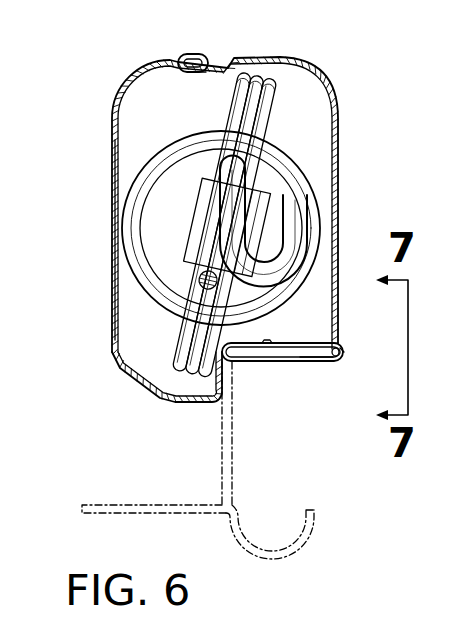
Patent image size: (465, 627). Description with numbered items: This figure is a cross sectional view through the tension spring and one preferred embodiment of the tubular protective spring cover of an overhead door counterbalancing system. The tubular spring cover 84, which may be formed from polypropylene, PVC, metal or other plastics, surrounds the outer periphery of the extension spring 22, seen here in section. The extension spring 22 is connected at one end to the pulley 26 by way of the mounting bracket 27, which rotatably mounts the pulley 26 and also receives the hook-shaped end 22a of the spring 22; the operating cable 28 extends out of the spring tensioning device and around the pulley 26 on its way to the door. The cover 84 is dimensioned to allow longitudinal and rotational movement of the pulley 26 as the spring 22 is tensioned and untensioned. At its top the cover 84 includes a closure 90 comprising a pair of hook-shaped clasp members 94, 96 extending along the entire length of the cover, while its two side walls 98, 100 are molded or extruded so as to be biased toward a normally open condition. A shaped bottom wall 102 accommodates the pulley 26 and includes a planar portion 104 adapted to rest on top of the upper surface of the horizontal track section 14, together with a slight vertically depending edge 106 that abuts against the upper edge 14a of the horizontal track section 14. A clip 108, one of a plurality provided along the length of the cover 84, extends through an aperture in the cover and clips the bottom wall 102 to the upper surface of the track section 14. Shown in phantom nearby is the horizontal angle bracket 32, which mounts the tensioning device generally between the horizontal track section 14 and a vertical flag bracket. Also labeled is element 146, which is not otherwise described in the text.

The horizontal section 14 is at (302, 540).
The upper edge 14a is at (342, 342).
The extension spring 22 is at (183, 124).
The hook-shaped end 22a is at (227, 208).
The pulley 26 is at (277, 104).
The mounting bracket 27 is at (203, 242).
The operating cable 28 is at (261, 82).
The horizontal angle bracket 32 is at (165, 505).
The tubular spring cover 84 is at (113, 89).
The closure 90 is at (198, 48).
The hook-shaped clasp member 94 is at (208, 60).
The hook-shaped clasp member 96 is at (197, 74).
The side wall 98 is at (110, 172).
The side wall 100 is at (339, 208).
The shaped bottom wall 102 is at (175, 403).
The planar portion 104 is at (240, 360).
The vertically depending edge 106 is at (326, 360).
The clip 108 is at (337, 358).
The latch bar 146 is at (260, 342).